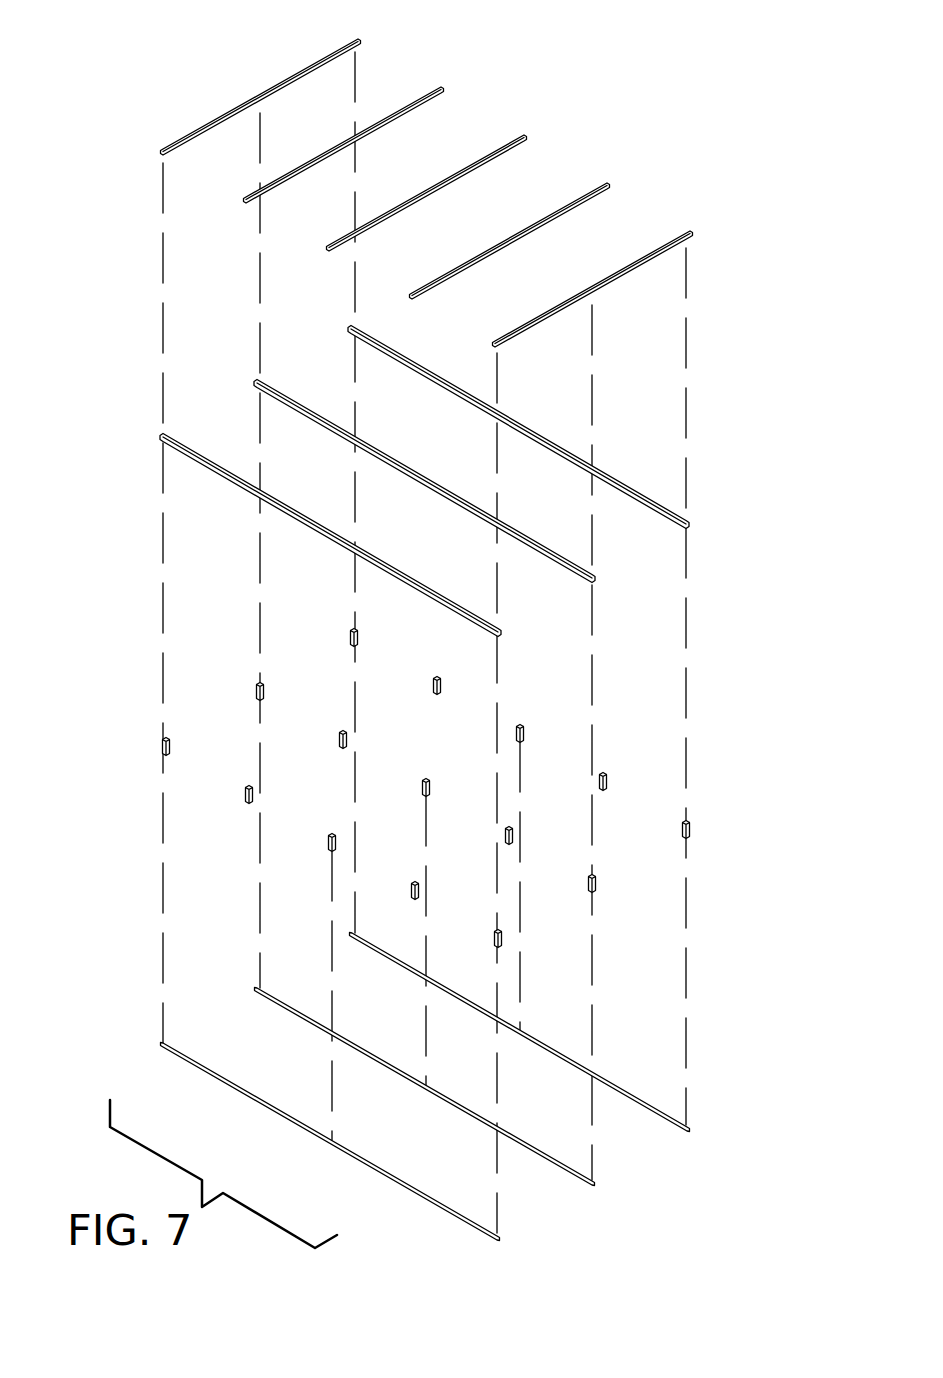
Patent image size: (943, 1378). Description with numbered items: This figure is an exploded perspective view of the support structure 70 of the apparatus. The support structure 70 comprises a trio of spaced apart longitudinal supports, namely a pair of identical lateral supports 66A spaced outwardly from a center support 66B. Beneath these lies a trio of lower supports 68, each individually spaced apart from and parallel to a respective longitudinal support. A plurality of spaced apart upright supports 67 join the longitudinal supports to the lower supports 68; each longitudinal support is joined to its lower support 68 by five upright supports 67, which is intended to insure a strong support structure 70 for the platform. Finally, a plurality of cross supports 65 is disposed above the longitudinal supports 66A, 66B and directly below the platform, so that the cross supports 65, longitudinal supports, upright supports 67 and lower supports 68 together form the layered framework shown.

The support structure 70 is at (652, 118).
The cross supports 65 is at (285, 83).
The lateral supports 66A is at (367, 550).
The center support 66B is at (284, 405).
The upright supports 67 is at (170, 741).
The lower supports 68 is at (498, 1236).